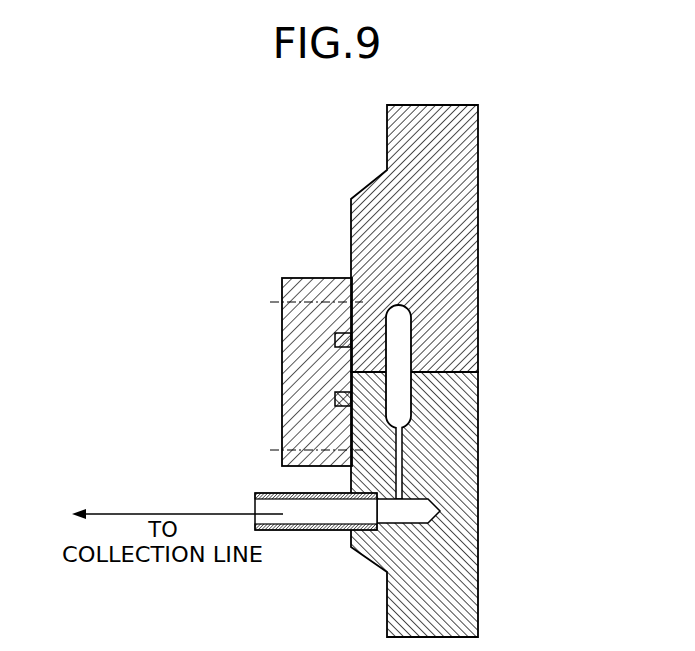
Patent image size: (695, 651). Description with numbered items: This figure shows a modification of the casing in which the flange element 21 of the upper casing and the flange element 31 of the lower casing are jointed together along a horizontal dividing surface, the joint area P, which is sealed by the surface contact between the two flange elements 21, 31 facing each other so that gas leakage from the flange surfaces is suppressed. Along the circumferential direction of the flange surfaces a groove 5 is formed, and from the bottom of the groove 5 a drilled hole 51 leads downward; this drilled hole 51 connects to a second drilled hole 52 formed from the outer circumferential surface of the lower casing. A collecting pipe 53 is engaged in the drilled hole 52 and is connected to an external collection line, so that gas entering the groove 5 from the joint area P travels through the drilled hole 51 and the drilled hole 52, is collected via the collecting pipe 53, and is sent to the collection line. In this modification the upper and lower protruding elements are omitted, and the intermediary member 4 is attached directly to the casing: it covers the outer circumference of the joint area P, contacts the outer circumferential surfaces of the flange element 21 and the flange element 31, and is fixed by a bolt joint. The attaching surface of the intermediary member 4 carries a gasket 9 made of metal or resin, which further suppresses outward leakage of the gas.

The flange element 21 is at (366, 184).
The flange element 31 is at (386, 598).
The joint area P is at (468, 367).
The intermediary member 4 is at (282, 340).
The gasket 9 is at (334, 397).
The groove 5 is at (400, 398).
The drilled hole 51 is at (402, 462).
The drilled hole 52 is at (428, 510).
The collecting pipe 53 is at (311, 532).